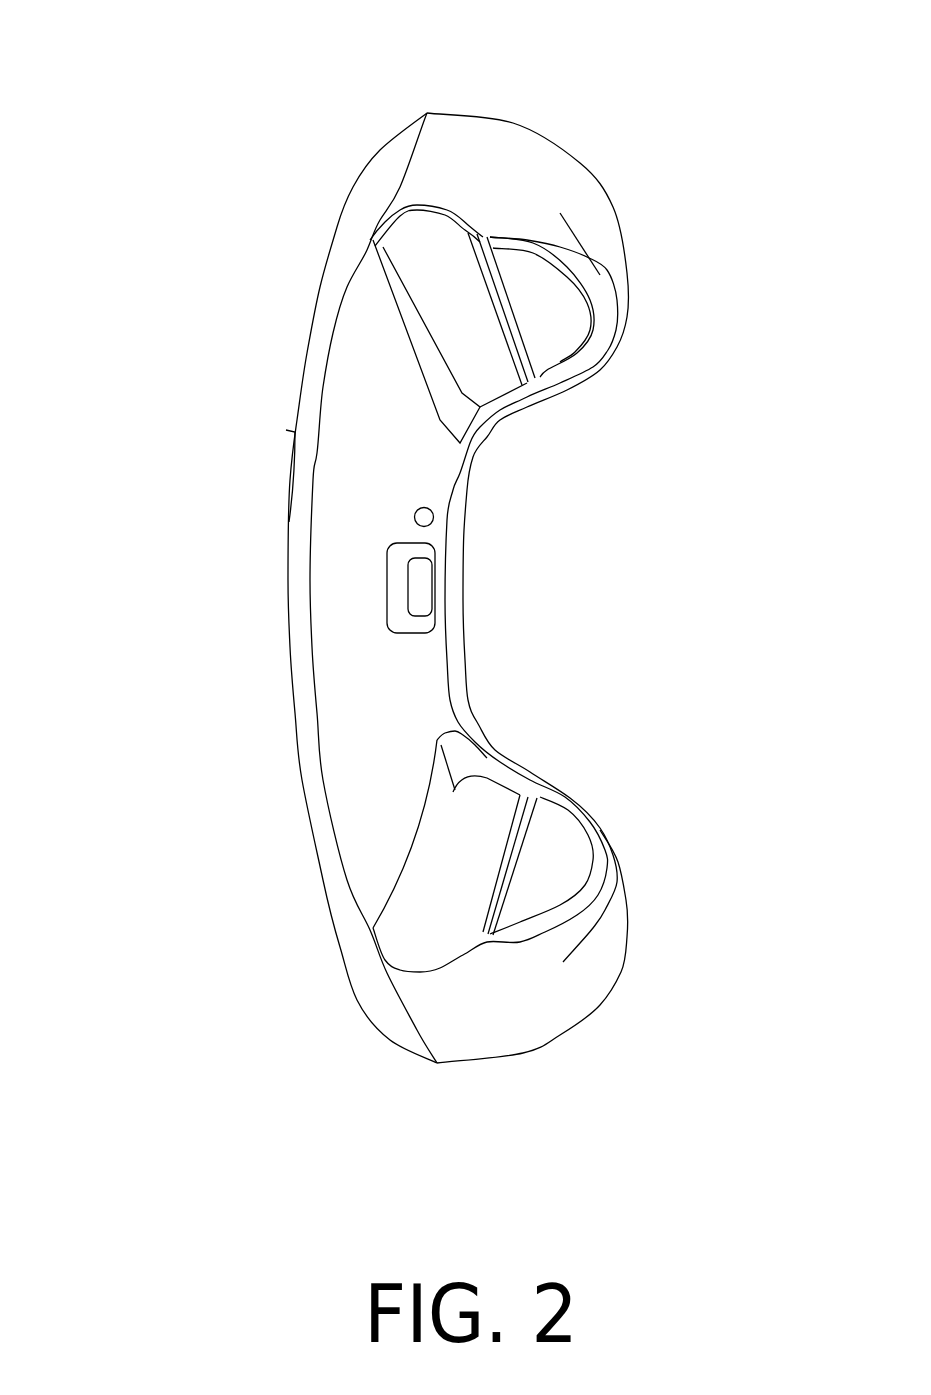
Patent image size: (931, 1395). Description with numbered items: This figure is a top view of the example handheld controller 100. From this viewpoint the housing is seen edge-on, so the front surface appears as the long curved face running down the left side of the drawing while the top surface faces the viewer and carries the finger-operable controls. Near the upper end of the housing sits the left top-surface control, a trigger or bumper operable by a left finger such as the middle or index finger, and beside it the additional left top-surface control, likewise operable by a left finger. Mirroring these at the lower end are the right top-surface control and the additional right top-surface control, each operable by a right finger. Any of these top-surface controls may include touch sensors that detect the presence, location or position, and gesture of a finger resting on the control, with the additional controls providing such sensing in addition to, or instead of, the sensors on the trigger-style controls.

The handheld controller 100 is at (752, 44).